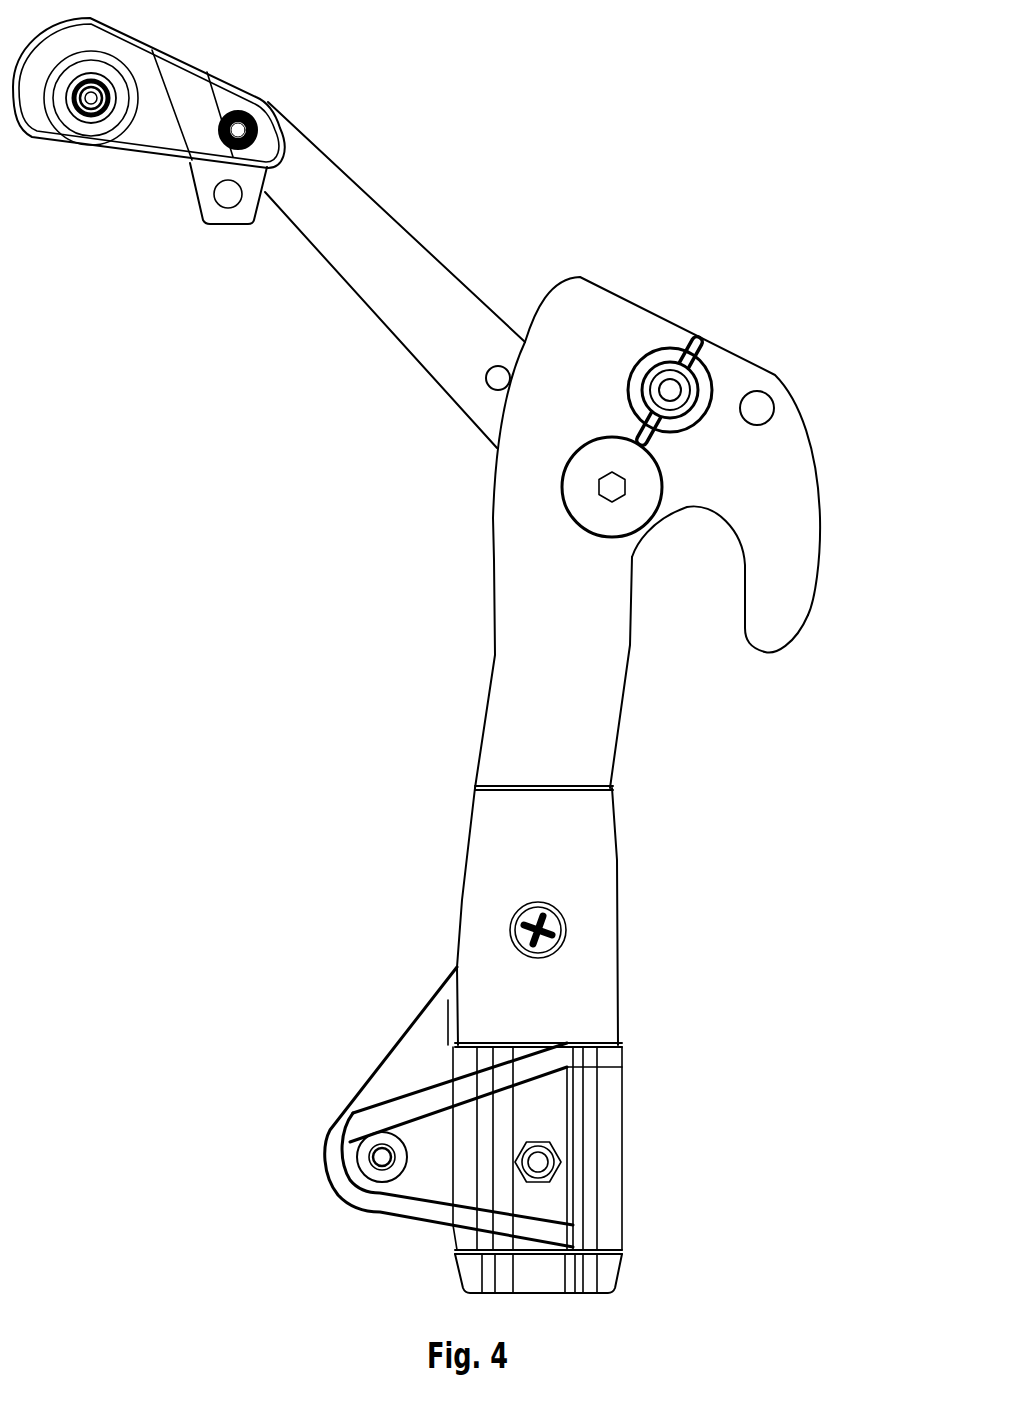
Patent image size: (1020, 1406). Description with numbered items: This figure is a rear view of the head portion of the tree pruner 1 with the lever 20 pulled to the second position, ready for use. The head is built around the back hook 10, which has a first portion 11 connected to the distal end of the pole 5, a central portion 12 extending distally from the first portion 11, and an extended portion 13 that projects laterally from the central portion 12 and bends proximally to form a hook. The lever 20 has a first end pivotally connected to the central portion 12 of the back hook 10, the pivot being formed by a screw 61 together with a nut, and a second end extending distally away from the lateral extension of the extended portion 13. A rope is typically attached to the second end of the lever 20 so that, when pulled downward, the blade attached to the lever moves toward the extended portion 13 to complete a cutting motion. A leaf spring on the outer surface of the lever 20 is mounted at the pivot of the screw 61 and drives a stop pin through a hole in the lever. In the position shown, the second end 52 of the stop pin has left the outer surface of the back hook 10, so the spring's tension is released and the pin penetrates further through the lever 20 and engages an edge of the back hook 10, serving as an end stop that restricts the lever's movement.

The tree pruner 1 is at (657, 182).
The lever 20 is at (369, 307).
The second end of the stop pin 52 is at (487, 384).
The back hook 10 is at (781, 379).
The central portion 12 is at (548, 437).
The first portion 11 is at (515, 720).
The extended portion 13 is at (780, 600).
The screw 61 is at (597, 510).
The pole 5 is at (573, 858).